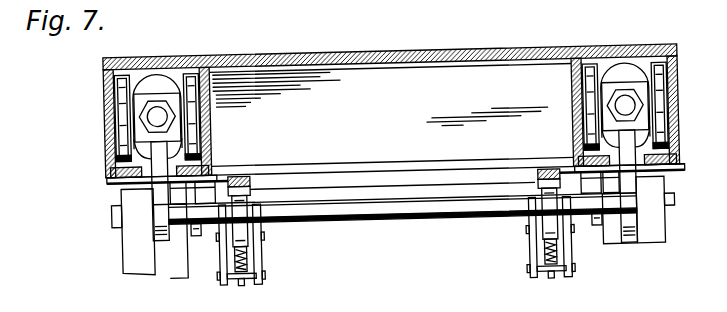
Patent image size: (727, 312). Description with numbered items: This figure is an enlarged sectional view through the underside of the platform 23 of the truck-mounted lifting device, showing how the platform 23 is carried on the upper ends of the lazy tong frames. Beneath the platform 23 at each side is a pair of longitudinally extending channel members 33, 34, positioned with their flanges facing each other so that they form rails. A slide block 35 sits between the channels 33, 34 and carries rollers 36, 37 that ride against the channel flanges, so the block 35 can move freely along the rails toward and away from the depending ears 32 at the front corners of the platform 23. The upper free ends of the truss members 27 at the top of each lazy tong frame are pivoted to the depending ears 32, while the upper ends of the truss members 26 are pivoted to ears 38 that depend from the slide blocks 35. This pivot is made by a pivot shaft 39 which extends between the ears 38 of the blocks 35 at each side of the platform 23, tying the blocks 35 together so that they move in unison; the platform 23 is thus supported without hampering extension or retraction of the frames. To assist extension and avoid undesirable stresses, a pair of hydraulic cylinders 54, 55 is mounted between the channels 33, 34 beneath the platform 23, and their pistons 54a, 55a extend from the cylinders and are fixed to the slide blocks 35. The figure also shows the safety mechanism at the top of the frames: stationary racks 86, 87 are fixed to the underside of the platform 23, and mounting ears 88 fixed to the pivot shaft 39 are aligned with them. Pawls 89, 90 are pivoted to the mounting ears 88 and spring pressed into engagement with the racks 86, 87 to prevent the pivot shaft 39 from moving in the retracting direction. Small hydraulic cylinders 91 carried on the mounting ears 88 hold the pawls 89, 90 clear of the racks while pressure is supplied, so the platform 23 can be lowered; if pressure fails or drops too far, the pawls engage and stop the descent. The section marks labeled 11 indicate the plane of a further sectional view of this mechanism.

The section line 11- 11 is at (538, 147).
The platform 23 is at (381, 57).
The truss member 26 is at (141, 270).
The truss member 27 is at (170, 272).
The depending ear 32 is at (190, 234).
The channel member 33 is at (105, 150).
The channel member 34 is at (210, 157).
The slide block 35 is at (156, 101).
The roller 36 is at (120, 118).
The roller 37 is at (187, 129).
The ear 38 is at (149, 216).
The pivot shaft 39 is at (394, 226).
The hydraulic cylinder 54 is at (128, 164).
The piston 54a is at (151, 118).
The hydraulic cylinder 55 is at (637, 148).
The piston 55a is at (628, 118).
The stationary rack 86 is at (247, 188).
The stationary rack 87 is at (534, 186).
The mounting ear 88 is at (216, 260).
The pawl 89 is at (241, 220).
The pawl 90 is at (551, 213).
The hydraulic cylinder 91 is at (242, 266).